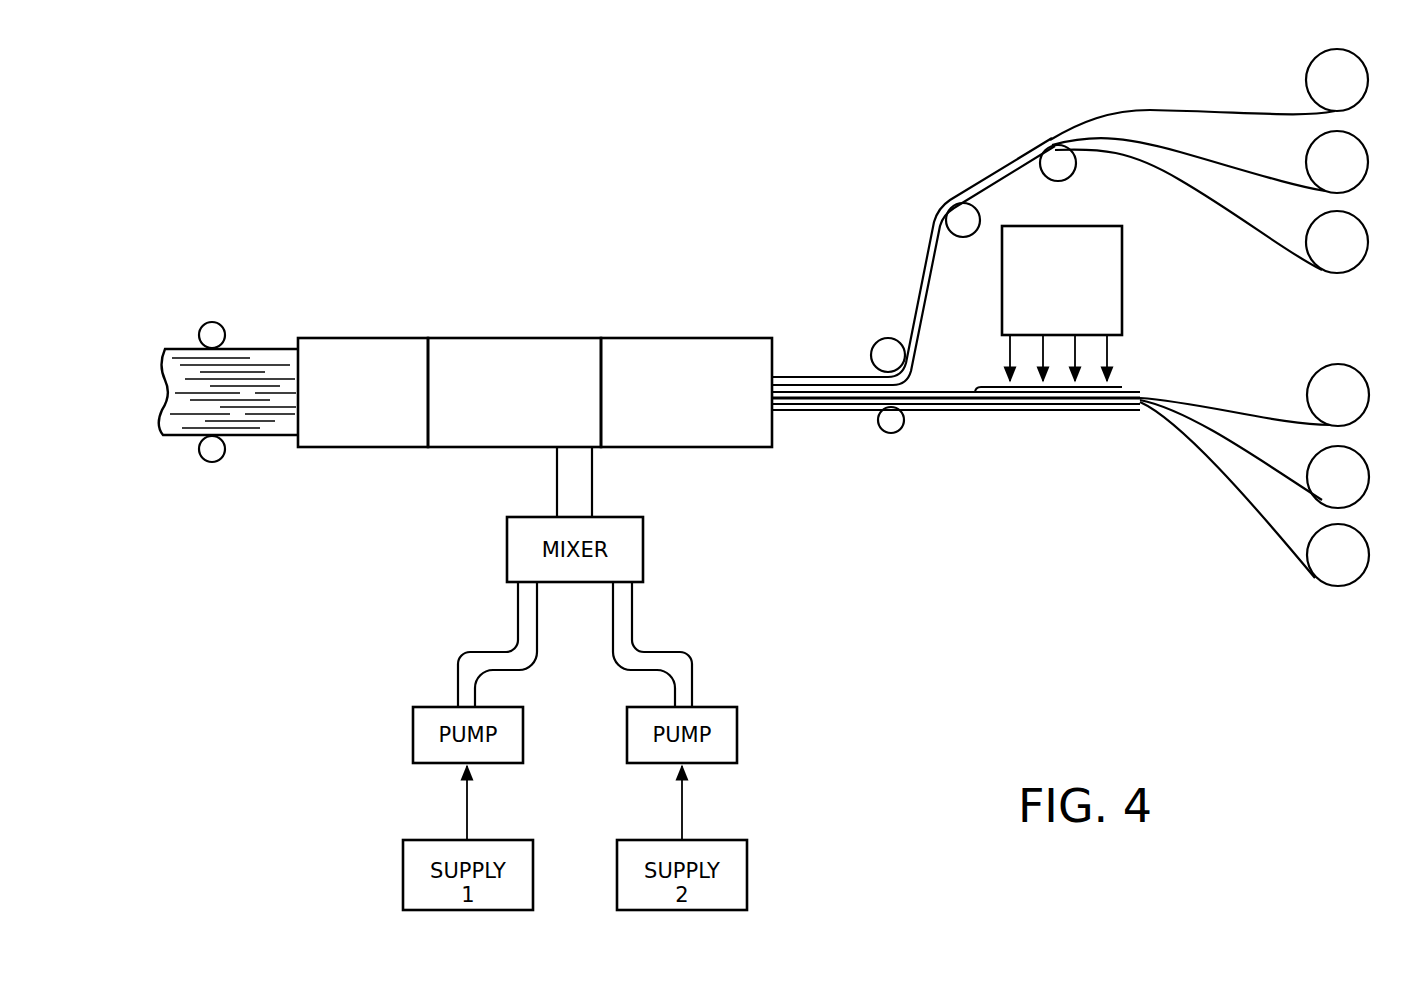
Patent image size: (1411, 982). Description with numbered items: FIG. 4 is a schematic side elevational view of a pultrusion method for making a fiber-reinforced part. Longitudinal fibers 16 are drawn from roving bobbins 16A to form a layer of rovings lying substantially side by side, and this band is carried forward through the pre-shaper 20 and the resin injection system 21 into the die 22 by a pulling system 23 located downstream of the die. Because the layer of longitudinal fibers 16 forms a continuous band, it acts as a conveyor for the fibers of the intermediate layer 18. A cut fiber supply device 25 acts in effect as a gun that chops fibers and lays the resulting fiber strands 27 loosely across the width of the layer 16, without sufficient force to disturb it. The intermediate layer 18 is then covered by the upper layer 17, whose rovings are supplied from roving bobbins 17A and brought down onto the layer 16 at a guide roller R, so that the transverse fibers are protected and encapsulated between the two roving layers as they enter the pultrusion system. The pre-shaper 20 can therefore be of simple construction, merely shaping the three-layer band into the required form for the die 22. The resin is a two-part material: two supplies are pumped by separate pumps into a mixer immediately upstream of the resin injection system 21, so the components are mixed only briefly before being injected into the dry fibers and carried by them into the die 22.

The longitudinal fibers 16 is at (833, 414).
The roving bobbins 16A is at (1275, 548).
The upper layer 17 is at (802, 373).
The roving bobbins 17A is at (1275, 97).
The intermediate layer 18 is at (952, 381).
The pre-shaper 20 is at (683, 336).
The resin injection system 21 is at (505, 336).
The die 22 is at (368, 336).
The pulling system 23 is at (215, 318).
The cut fiber supply device 25 is at (1125, 268).
The fiber strands 27 is at (1112, 354).
The guide roller R is at (890, 336).